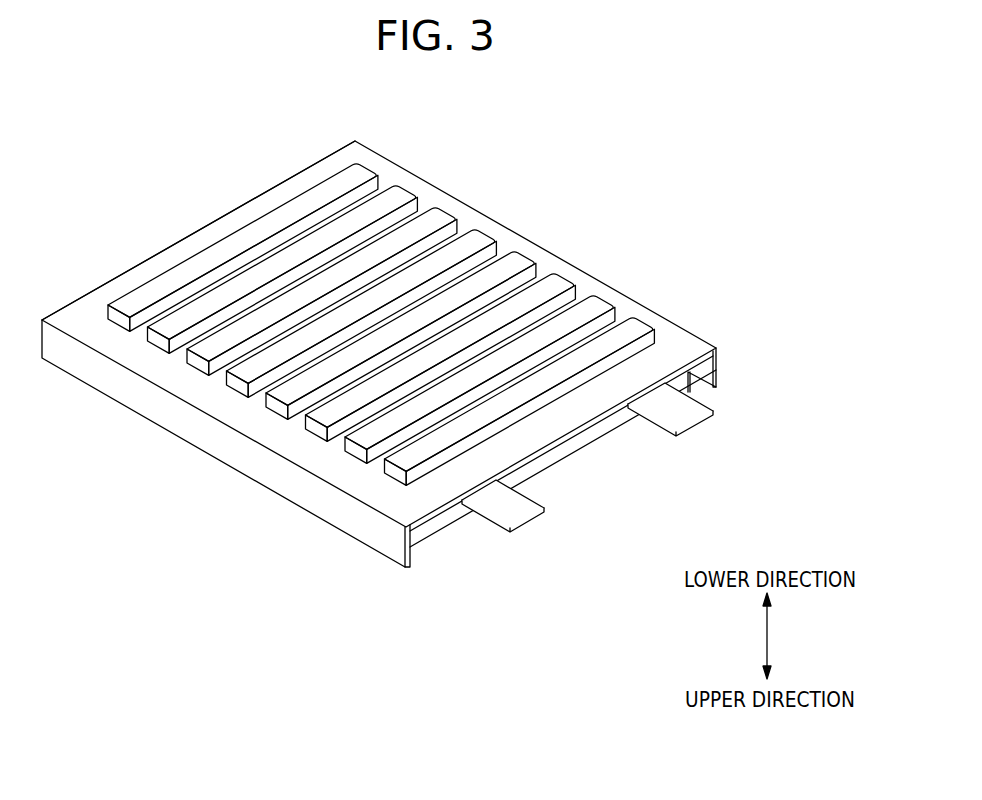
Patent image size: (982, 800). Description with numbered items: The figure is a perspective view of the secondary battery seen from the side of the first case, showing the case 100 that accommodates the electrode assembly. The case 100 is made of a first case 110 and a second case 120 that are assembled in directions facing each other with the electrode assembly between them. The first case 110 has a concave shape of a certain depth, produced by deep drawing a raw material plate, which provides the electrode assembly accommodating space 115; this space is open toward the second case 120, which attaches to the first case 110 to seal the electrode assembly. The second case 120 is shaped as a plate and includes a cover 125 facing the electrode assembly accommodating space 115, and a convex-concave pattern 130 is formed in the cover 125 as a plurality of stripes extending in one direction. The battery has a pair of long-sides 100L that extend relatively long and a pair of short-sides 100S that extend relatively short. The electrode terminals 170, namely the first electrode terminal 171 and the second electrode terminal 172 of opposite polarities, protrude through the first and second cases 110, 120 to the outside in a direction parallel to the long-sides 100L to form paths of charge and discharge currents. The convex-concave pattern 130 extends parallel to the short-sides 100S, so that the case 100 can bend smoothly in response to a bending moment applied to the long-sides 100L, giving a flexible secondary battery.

The case 100 is at (787, 254).
The first case 110 is at (690, 393).
The second case 120 is at (657, 320).
The cover 125 is at (297, 196).
The convex-concave pattern 130 is at (437, 217).
The short-sides 100S is at (198, 231).
The long-sides 100L is at (222, 447).
The electrode assembly accommodating space 115 is at (575, 451).
The electrode terminals 170 is at (697, 427).
The first electrode terminal 171 is at (503, 506).
The second electrode terminal 172 is at (670, 409).